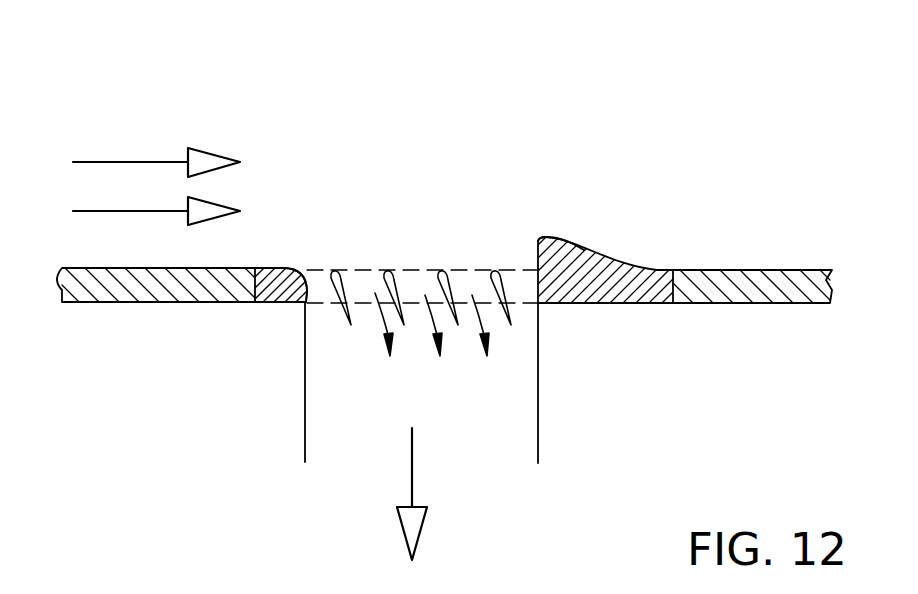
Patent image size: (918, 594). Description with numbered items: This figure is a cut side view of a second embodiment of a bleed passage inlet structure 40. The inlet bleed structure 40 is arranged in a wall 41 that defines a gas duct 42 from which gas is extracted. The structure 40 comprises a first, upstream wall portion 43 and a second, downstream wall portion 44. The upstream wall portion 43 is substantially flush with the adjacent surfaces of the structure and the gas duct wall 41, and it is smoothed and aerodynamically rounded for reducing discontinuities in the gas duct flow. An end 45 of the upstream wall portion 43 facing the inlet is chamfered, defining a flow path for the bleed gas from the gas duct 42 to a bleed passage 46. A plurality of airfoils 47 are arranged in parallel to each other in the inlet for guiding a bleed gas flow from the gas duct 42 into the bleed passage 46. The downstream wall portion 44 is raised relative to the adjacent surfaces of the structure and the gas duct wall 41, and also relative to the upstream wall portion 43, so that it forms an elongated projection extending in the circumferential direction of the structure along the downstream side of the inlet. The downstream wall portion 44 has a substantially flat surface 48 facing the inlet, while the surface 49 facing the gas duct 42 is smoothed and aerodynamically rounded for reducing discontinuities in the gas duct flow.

The bleed passage inlet structure 40 is at (490, 125).
The wall 41 is at (235, 268).
The gas duct 42 is at (213, 250).
The upstream wall portion 43 is at (280, 297).
The downstream wall portion 44 is at (558, 238).
The end of the upstream wall portion 45 is at (305, 268).
The bleed passage 46 is at (512, 424).
The airfoils 47 is at (497, 303).
The flat surface 48 is at (532, 243).
The surface facing the gas duct 49 is at (628, 258).